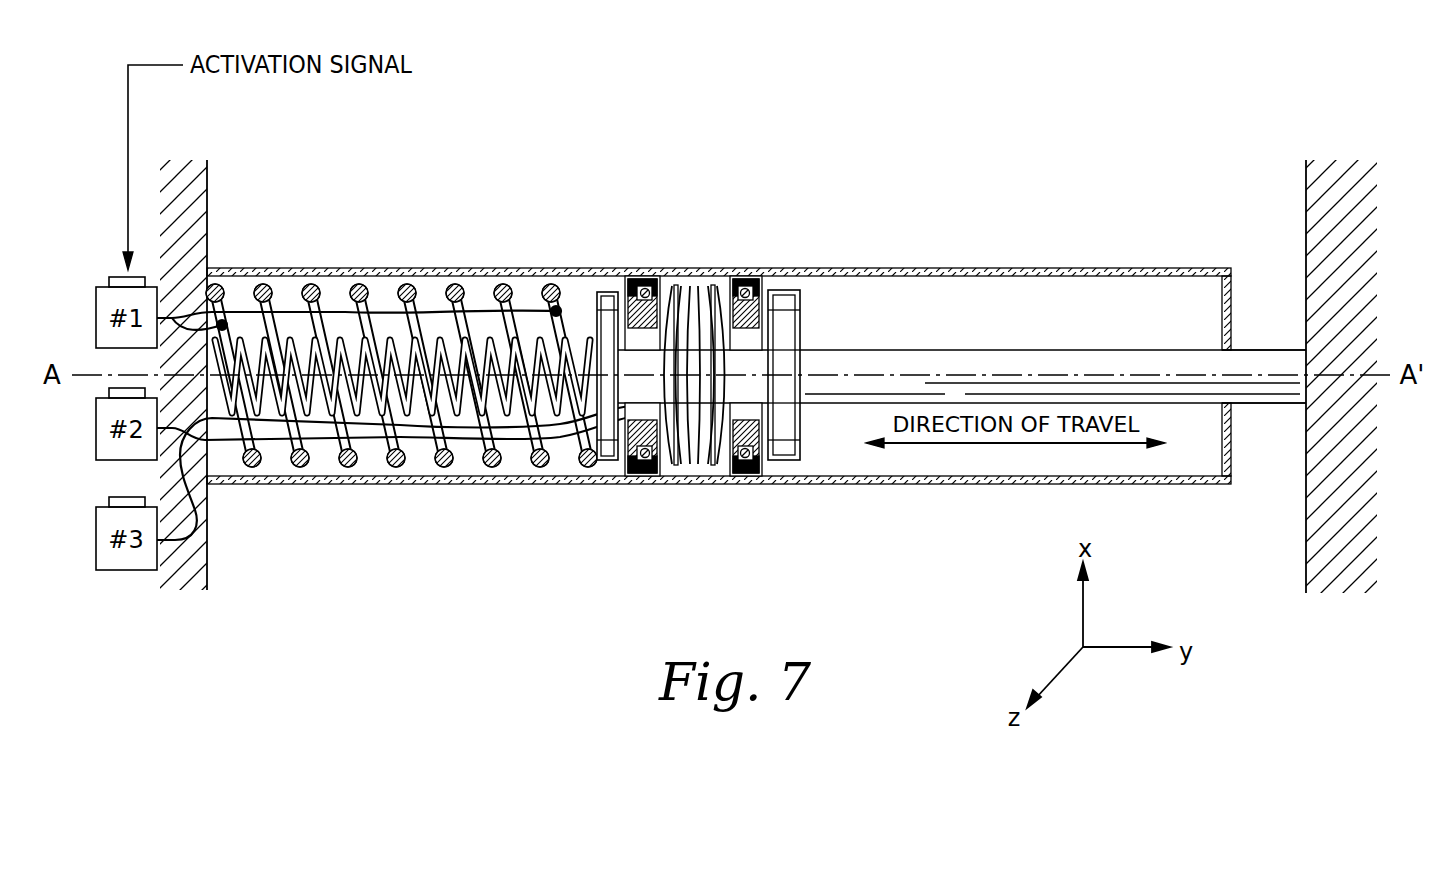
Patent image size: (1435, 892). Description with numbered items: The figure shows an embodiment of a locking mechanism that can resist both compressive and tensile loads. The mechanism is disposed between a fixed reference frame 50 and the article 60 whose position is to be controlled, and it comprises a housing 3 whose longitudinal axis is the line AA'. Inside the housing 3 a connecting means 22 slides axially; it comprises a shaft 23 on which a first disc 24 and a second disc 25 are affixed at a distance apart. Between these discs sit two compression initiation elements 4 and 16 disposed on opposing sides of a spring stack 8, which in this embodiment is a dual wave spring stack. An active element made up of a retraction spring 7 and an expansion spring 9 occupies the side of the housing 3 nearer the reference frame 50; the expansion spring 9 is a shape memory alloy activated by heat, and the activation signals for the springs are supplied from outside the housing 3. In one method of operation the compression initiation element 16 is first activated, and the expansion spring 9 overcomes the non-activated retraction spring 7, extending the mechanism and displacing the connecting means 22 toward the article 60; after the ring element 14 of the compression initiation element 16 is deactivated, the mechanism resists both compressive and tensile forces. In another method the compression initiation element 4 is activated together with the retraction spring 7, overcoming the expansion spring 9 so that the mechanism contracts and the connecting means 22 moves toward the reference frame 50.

The housing 3 is at (935, 268).
The compression initiation element 4 is at (630, 292).
The retraction spring 7 is at (400, 338).
The spring stack 8 is at (700, 292).
The expansion spring 9 is at (324, 448).
The ring 14 is at (742, 460).
The compression initiation element 16 is at (765, 292).
The connecting means 22 is at (1166, 349).
The shaft 23 is at (1025, 360).
The first disc 24 is at (595, 307).
The second disc 25 is at (800, 322).
The reference frame 50 is at (207, 200).
The article 60 is at (1306, 523).